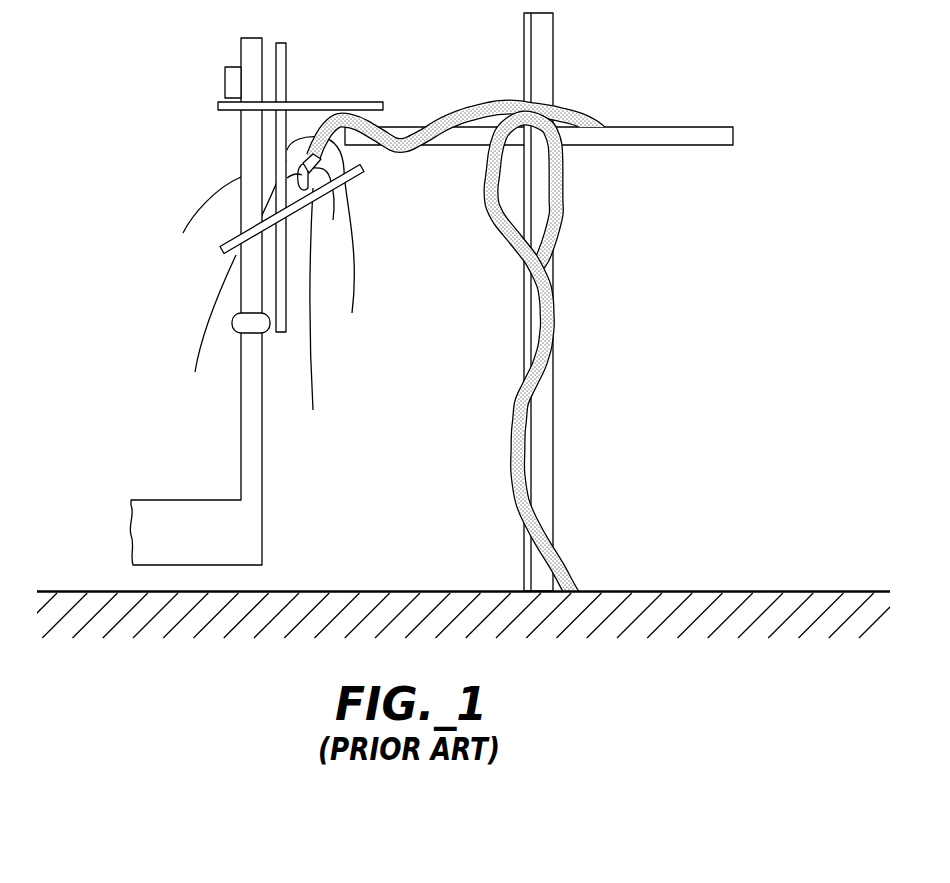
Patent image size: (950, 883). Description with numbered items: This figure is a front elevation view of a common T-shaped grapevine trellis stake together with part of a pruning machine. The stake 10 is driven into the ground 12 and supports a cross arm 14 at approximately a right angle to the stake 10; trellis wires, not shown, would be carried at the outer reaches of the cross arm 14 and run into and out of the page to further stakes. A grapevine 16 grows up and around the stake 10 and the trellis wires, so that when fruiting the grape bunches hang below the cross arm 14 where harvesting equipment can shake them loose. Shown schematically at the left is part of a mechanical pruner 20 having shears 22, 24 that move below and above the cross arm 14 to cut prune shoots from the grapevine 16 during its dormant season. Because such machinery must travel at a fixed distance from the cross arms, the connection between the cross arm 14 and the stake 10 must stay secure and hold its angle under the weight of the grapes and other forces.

The stake 10 is at (555, 438).
The ground 12 is at (673, 590).
The cross arm 14 is at (690, 127).
The grapevine 16 is at (508, 449).
The mechanical pruner 20 is at (183, 457).
The shear 22 is at (358, 176).
The shear 24 is at (320, 101).